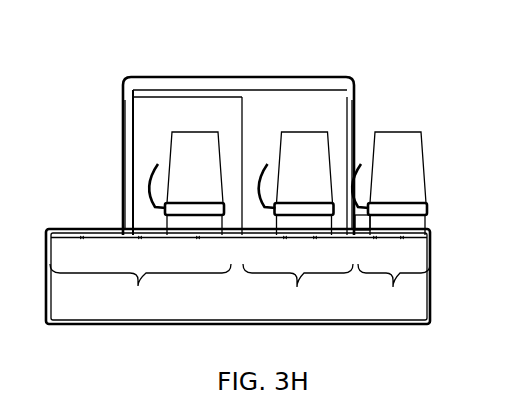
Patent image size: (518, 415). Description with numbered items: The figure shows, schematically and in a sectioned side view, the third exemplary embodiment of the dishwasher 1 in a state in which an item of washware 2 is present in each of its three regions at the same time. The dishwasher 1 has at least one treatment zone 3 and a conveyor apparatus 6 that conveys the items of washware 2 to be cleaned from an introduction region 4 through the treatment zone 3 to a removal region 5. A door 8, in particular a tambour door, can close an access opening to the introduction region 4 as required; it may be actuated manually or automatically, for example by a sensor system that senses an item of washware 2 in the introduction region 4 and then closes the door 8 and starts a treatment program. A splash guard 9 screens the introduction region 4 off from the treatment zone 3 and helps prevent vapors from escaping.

The dishwasher 1 is at (342, 54).
The item of washware 2 is at (197, 185).
The treatment zone 3 is at (298, 292).
The introduction region 4 is at (140, 291).
The removal region 5 is at (394, 291).
The conveyor apparatus 6 is at (100, 237).
The door 8 is at (125, 180).
The splash guard 9 is at (240, 163).